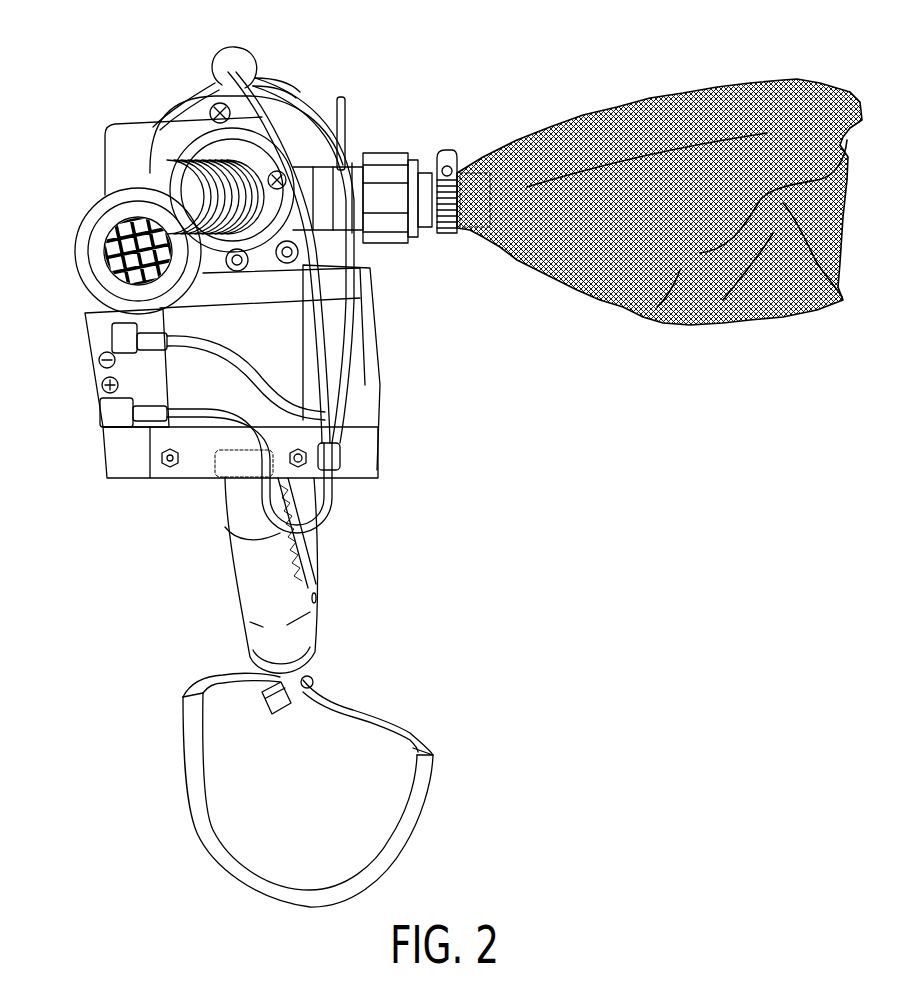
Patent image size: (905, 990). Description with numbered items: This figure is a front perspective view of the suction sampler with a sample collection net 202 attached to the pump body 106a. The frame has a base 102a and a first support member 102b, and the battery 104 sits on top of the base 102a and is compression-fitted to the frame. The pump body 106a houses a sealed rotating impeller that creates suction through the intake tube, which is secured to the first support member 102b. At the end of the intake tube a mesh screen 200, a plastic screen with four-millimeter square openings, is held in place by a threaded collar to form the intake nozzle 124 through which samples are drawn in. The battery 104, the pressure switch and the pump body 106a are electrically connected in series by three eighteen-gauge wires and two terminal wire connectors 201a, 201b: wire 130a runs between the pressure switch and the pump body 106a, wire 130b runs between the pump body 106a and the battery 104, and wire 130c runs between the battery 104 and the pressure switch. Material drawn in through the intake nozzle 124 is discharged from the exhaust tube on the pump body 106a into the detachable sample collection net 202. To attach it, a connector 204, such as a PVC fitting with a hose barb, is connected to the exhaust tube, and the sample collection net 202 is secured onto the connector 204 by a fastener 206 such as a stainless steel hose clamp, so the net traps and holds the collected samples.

The base 102a is at (360, 453).
The first support member 102b is at (130, 130).
The battery 104 is at (372, 355).
The pump body 106a is at (286, 85).
The intake nozzle 124 is at (100, 290).
The wire 130a is at (235, 68).
The wire 130b is at (357, 253).
The wire 130c is at (233, 373).
The mesh screen 200 is at (110, 262).
The terminal wire connector 201a is at (118, 333).
The terminal wire connector 201b is at (113, 410).
The sample collection net 202 is at (695, 107).
The connector 204 is at (388, 166).
The fastener 206 is at (444, 166).